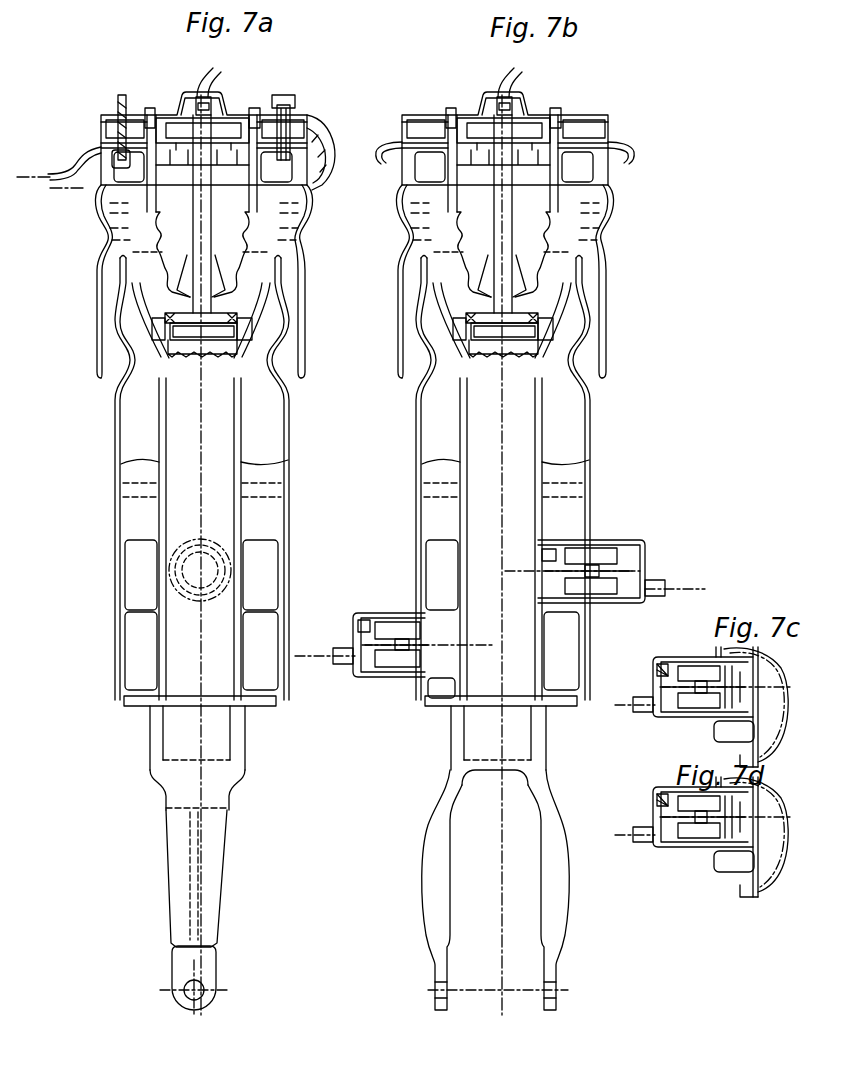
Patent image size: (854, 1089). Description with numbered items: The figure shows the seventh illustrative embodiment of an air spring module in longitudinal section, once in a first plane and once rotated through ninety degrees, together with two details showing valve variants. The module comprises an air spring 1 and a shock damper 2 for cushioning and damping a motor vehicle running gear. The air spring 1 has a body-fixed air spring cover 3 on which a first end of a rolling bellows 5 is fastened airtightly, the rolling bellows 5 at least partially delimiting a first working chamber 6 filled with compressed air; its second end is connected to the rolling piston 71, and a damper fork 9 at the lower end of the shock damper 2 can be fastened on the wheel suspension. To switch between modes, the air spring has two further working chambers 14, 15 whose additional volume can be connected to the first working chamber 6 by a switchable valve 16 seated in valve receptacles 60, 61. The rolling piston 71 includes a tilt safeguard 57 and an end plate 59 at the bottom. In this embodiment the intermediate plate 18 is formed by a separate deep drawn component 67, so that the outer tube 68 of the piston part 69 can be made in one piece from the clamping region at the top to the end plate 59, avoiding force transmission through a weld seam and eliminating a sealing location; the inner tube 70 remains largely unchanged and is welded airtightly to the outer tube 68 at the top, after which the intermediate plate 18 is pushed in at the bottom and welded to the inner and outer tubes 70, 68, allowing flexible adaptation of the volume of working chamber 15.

In FIG. 7A, the air spring 1 is at (318, 187).
In FIG. 7A, the shock damper 2 is at (184, 424).
In FIG. 7A, the air spring cover 3 is at (112, 149).
In FIG. 7A, the rolling bellows 5 is at (98, 196).
In FIG. 7A, the first working chamber 6 is at (298, 229).
In FIG. 7B, the first working chamber 6 is at (596, 229).
In FIG. 7A, the damper fork 9 is at (210, 856).
In FIG. 7A, the further working chamber 14 is at (268, 435).
In FIG. 7B, the further working chamber 14 is at (513, 506).
In FIG. 7A, the further working chamber 15 is at (268, 661).
In FIG. 7B, the further working chamber 15 is at (568, 662).
In FIG. 7B, the switchable valve 16 is at (662, 553).
In FIG. 7A, the intermediate plate 18 is at (271, 538).
In FIG. 7A, the tilt safeguard 57 is at (158, 334).
In FIG. 7A, the end plate 59 is at (128, 704).
In FIG. 7B, the valve receptacle 60 is at (607, 545).
In FIG. 7B, the valve receptacle 61 is at (382, 615).
In FIG. 7A, the separate component 67 is at (138, 540).
In FIG. 7B, the separate component 67 is at (440, 540).
In FIG. 7A, the outer tube 68 is at (116, 447).
In FIG. 7B, the outer tube 68 is at (583, 504).
In FIG. 7A, the piston part 69 is at (301, 436).
In FIG. 7B, the piston part 69 is at (599, 430).
In FIG. 7A, the inner tube 70 is at (242, 468).
In FIG. 7B, the inner tube 70 is at (540, 398).
In FIG. 7A, the rolling piston 71 is at (291, 360).